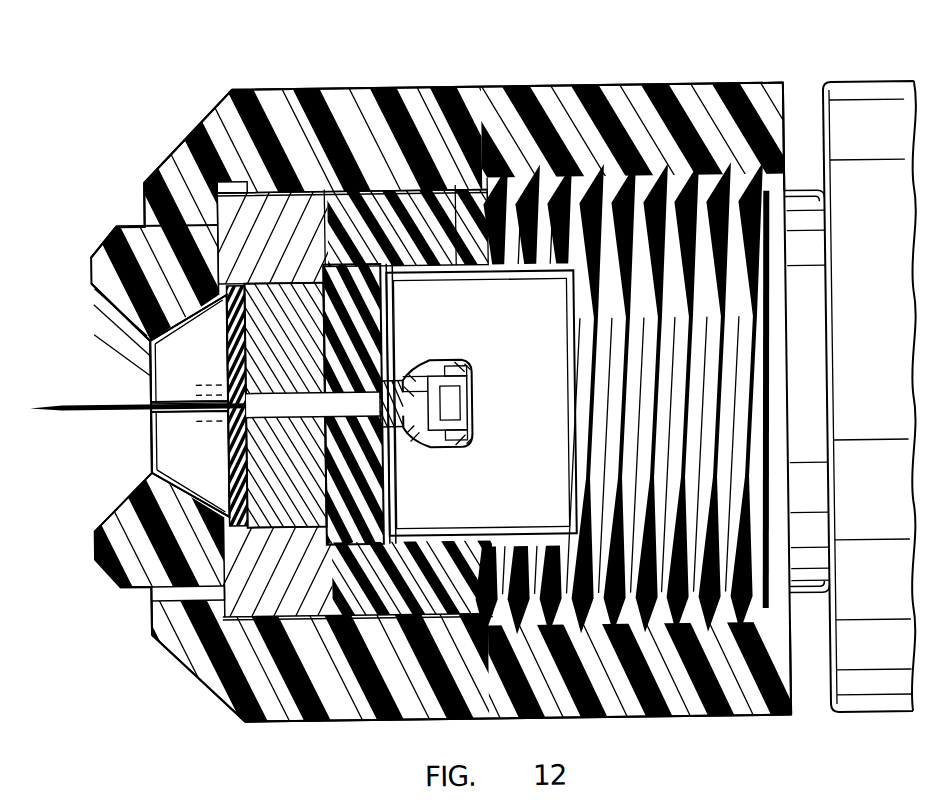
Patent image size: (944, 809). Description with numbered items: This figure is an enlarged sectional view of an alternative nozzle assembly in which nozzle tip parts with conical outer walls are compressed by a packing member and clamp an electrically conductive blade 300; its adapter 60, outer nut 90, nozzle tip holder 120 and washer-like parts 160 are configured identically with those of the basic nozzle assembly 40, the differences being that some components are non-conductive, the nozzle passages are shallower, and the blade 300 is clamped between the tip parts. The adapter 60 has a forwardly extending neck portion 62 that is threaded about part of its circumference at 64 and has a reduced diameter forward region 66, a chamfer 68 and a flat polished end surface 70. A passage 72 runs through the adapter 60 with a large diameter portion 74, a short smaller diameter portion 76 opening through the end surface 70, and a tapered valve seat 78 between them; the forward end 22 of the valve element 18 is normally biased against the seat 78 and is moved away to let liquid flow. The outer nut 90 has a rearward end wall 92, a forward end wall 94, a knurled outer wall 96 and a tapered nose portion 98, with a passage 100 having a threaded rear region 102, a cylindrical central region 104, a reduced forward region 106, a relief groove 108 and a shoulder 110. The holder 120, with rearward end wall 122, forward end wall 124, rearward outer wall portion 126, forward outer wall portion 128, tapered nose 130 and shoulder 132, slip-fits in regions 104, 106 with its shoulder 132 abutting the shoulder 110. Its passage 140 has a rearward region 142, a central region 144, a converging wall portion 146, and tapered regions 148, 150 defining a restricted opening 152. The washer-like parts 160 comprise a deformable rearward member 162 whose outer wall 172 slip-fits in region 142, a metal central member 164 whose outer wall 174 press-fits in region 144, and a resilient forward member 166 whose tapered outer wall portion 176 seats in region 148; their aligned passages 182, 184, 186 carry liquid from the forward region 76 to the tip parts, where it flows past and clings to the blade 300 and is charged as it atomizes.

The valve element 18 is at (466, 395).
The forward end of valve element 22 is at (432, 425).
The nozzle assembly 40 is at (308, 755).
The adapter 60 is at (859, 82).
The neck portion 62 is at (797, 205).
The threaded part of neck portion 64 is at (667, 165).
The reduced diameter forward region of neck portion 66 is at (458, 185).
The chamfer 68 is at (355, 175).
The end surface 70 is at (327, 188).
The passage 72 is at (463, 368).
The large diameter portion of passage 74 is at (469, 423).
The smaller diameter portion of passage 76 is at (404, 383).
The tapered valve seat 78 is at (422, 370).
The outer nut 90 is at (262, 85).
The rearward end wall of outer nut 92 is at (792, 102).
The forward end wall of outer nut 94 is at (150, 200).
The knurled outer wall 96 is at (550, 83).
The tapered nose portion 98 is at (219, 108).
The passage through nut 100 is at (365, 719).
The threaded rear region 102 is at (555, 719).
The central region of nut passage 104 is at (270, 719).
The forward region of nut passage 106 is at (151, 594).
The relief groove 108 is at (218, 645).
The shoulder 110 is at (183, 640).
The nozzle tip holder 120 is at (131, 218).
The rearward end wall of holder 122 is at (508, 160).
The forward end wall of holder 124 is at (93, 262).
The rearward outer wall portion 126 is at (283, 125).
The forward outer wall portion 128 is at (147, 640).
The tapered nose 130 is at (100, 258).
The shoulder 132 is at (215, 185).
The passage through holder 140 is at (456, 532).
The rearward region of holder passage 142 is at (485, 530).
The central region of holder passage 144 is at (274, 298).
The converging tapered wall portion 146 is at (303, 290).
The converging tapered region 148 is at (152, 343).
The diverging tapered region 150 is at (93, 298).
The restricted diameter opening 152 is at (152, 363).
The washer-like parts 160 is at (300, 660).
The rearward member 162 is at (400, 588).
The central member 164 is at (300, 470).
The forward member 166 is at (242, 532).
The outer wall of rearward member 172 is at (355, 427).
The outer wall of central member 174 is at (298, 535).
The tapered outer wall portion 176 is at (233, 295).
The passage through rearward member 182 is at (370, 419).
The passage through central member 184 is at (300, 421).
The passage through forward member 186 is at (226, 425).
The electrically conductive blade 300 is at (103, 403).